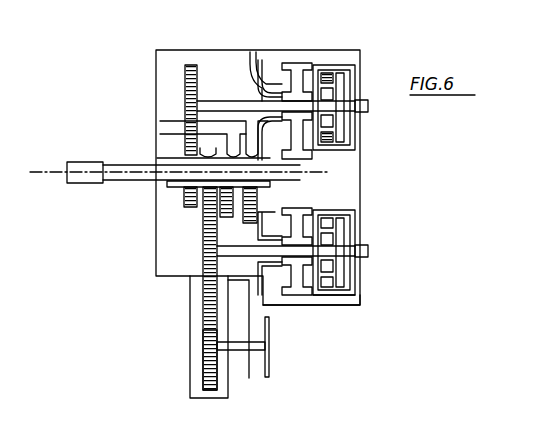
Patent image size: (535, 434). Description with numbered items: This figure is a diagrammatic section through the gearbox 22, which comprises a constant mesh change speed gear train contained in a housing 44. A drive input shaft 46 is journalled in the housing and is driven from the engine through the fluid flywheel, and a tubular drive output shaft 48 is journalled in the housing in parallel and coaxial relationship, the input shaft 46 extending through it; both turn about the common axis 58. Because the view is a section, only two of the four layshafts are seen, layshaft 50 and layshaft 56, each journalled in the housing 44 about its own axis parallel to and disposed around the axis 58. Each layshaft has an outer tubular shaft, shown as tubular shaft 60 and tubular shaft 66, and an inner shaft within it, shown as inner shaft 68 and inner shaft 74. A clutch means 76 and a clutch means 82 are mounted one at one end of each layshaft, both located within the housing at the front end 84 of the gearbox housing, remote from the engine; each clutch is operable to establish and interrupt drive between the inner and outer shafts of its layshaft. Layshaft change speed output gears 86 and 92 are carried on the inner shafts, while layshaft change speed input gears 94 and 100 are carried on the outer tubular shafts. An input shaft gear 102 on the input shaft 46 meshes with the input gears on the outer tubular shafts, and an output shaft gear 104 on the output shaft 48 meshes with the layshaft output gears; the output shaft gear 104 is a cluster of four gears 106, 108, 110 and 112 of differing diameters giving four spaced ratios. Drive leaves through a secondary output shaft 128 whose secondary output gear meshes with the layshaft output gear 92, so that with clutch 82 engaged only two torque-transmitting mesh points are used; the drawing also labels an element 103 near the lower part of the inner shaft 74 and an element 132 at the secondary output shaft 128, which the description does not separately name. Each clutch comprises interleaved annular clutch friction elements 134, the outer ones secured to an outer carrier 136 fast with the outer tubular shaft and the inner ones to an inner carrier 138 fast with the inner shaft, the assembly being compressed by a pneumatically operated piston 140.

The gearbox 22 is at (138, 284).
The housing 44 is at (185, 282).
The drive input shaft 46 is at (110, 181).
The drive output shaft 48 is at (160, 166).
The layshaft 50 is at (276, 84).
The layshaft 56 is at (270, 274).
The axis 58 is at (47, 162).
The outer tubular shaft 60 is at (260, 68).
The outer tubular shaft 66 is at (254, 246).
The inner shaft 68 is at (208, 100).
The inner shaft 74 is at (203, 280).
The clutch means 76 is at (364, 137).
The clutch means 82 is at (364, 300).
The front end 84 is at (362, 306).
The layshaft change speed output gear 86 is at (185, 70).
The layshaft change speed output gear 92 is at (203, 236).
The layshaft change speed input gear 94 is at (337, 72).
The layshaft change speed input gear 100 is at (290, 296).
The input shaft gear 102 is at (313, 213).
The gear 103 is at (205, 368).
The output shaft gear 104 is at (340, 226).
The gear 106 is at (186, 196).
The gear 108 is at (203, 220).
The gear 110 is at (160, 134).
The gear 112 is at (160, 121).
The secondary output shaft 128 is at (247, 351).
The shift fork 132 is at (268, 374).
The clutch friction elements 134 is at (332, 147).
The outer carrier 136 is at (343, 63).
The inner carrier 138 is at (357, 118).
The piston 140 is at (350, 83).